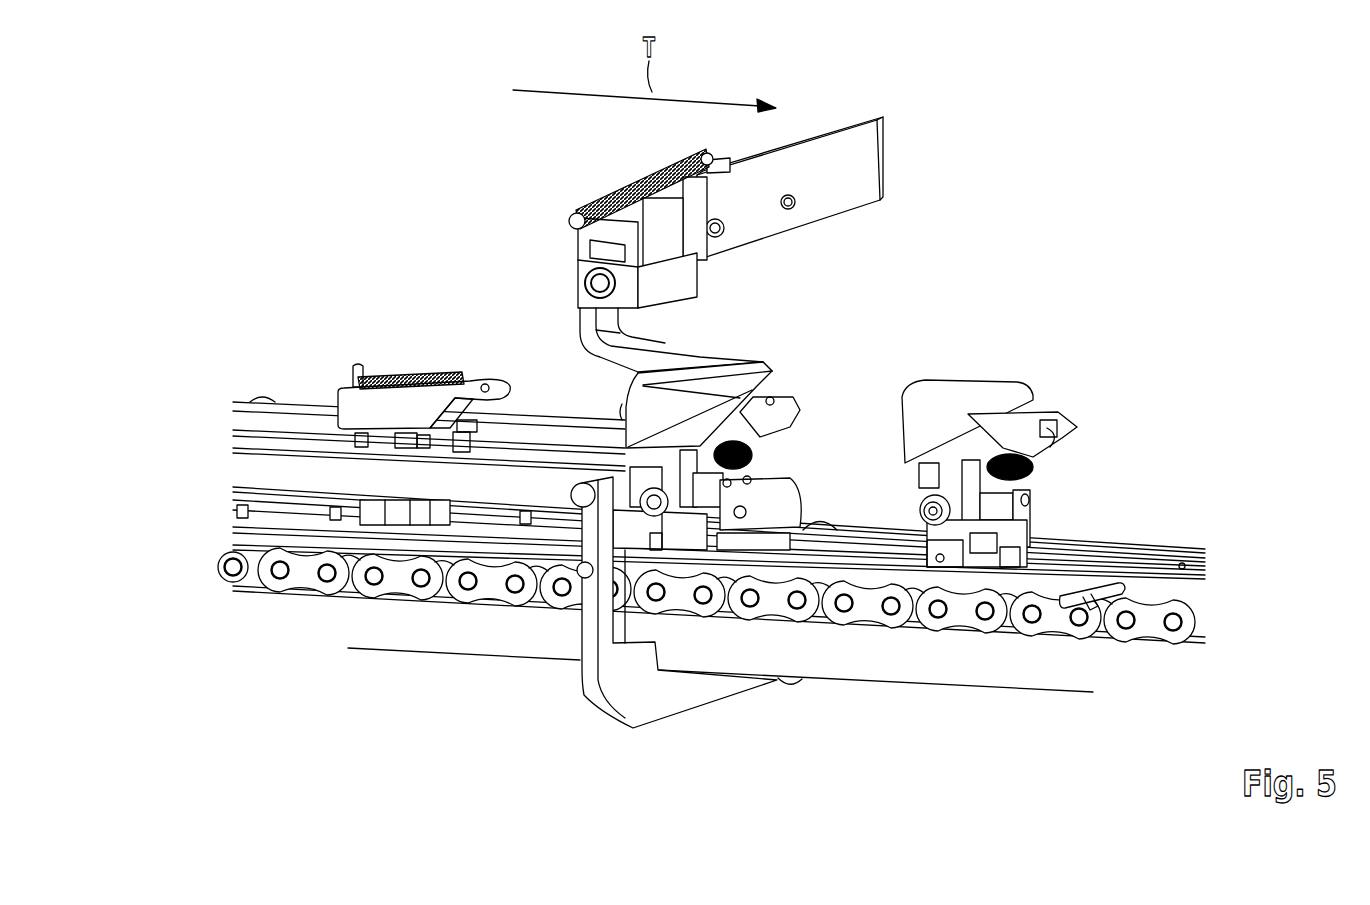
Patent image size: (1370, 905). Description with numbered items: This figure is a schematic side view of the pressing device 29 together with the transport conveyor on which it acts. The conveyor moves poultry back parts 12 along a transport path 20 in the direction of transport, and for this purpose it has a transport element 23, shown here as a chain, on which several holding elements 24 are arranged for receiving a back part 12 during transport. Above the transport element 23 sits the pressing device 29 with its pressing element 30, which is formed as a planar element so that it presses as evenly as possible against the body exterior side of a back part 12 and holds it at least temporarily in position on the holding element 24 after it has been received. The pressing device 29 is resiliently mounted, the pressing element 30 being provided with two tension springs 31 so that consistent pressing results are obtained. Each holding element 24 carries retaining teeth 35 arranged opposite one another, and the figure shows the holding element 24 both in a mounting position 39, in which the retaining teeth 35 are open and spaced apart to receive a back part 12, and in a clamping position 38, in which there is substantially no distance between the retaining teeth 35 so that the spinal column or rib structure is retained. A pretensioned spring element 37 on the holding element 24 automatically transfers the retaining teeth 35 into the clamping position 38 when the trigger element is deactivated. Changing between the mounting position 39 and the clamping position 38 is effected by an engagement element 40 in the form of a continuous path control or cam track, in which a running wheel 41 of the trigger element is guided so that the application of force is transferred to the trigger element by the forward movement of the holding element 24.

The back part 12 is at (952, 396).
The transport path 20 is at (711, 650).
The transport element 23 is at (963, 609).
The holding element 24 is at (350, 391).
The pressing device 29 is at (826, 112).
The pressing element 30 is at (593, 318).
The tension spring 31 is at (614, 194).
The retaining tooth 35 is at (388, 375).
The spring element 37 is at (1032, 473).
The clamping position 38 is at (1000, 426).
The mounting position 39 is at (424, 361).
The engagement element 40 is at (492, 484).
The running wheel 41 is at (666, 507).